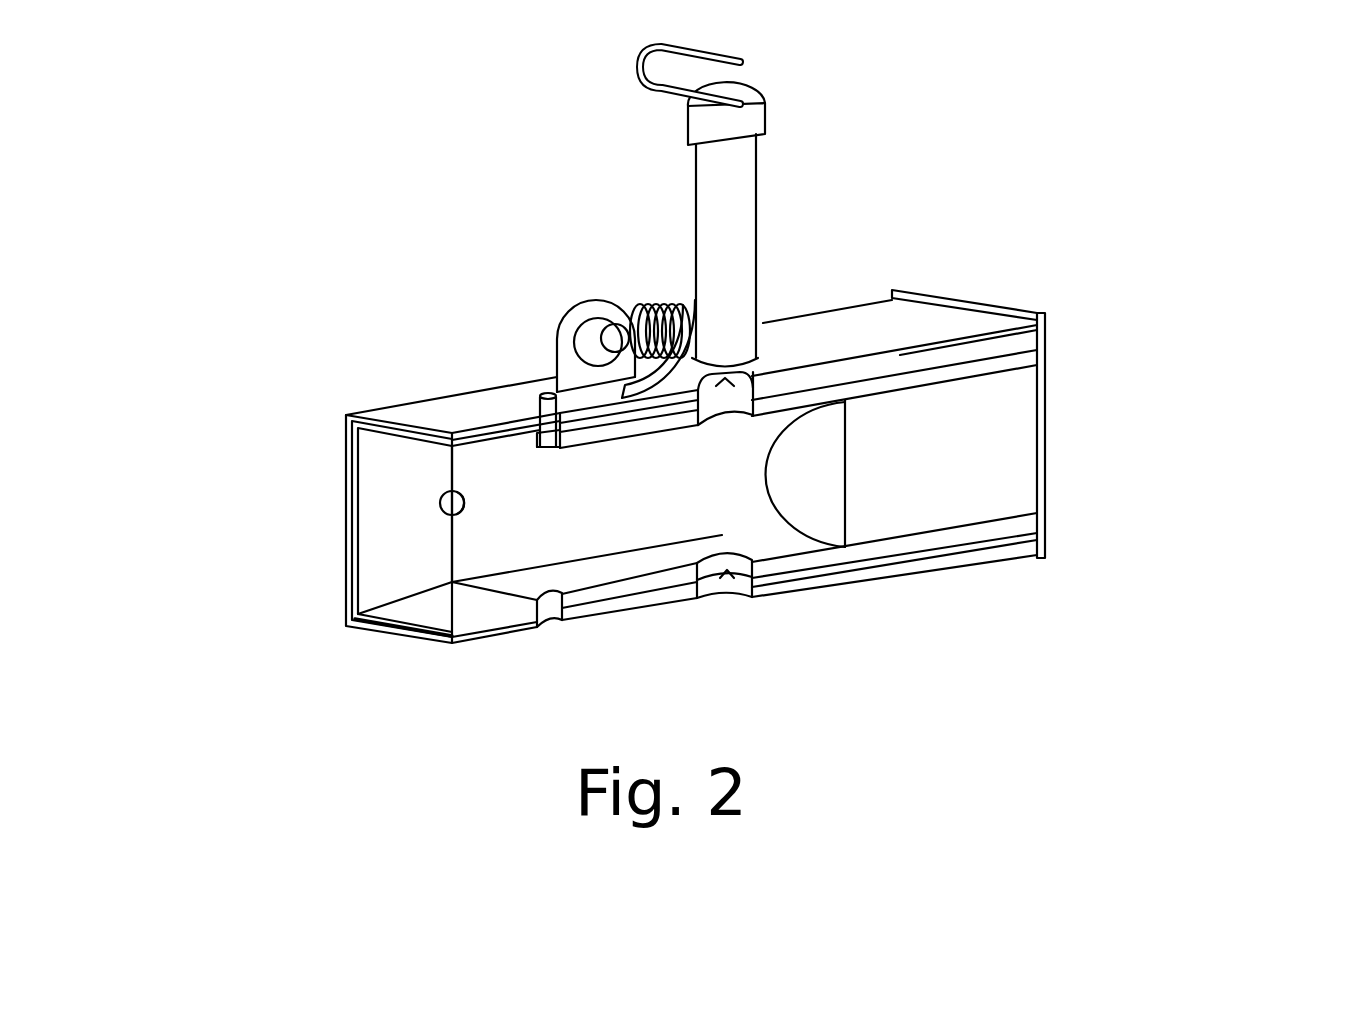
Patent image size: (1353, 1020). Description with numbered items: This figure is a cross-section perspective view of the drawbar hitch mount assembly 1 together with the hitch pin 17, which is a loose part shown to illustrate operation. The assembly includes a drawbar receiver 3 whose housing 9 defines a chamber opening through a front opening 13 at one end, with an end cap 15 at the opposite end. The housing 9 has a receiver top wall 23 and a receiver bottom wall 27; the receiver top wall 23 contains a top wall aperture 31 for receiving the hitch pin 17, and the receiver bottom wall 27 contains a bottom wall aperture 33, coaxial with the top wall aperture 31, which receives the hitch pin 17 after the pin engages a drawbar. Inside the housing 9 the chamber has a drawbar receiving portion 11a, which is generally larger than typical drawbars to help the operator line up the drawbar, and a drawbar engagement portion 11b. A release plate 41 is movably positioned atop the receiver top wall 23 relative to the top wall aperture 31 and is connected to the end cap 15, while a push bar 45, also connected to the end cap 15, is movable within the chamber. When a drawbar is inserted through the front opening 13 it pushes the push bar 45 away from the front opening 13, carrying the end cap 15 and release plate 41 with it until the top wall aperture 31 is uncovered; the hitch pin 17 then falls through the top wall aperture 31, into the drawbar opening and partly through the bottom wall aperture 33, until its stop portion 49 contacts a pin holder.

The drawbar hitch mount assembly 1 is at (425, 242).
The drawbar receiver 3 is at (613, 622).
The housing 9 is at (377, 410).
The drawbar receiving portion 11a is at (414, 518).
The drawbar engagement portion 11b is at (542, 506).
The front opening 13 is at (380, 480).
The end cap 15 is at (1045, 398).
The hitch pin 17 is at (752, 208).
The receiver top wall 23 is at (1000, 347).
The receiver bottom wall 27 is at (1003, 540).
The top wall aperture 31 is at (730, 385).
The bottom wall aperture 33 is at (734, 586).
The release plate 41 is at (937, 328).
The push bar 45 is at (1000, 492).
The stop portion 49 is at (697, 150).